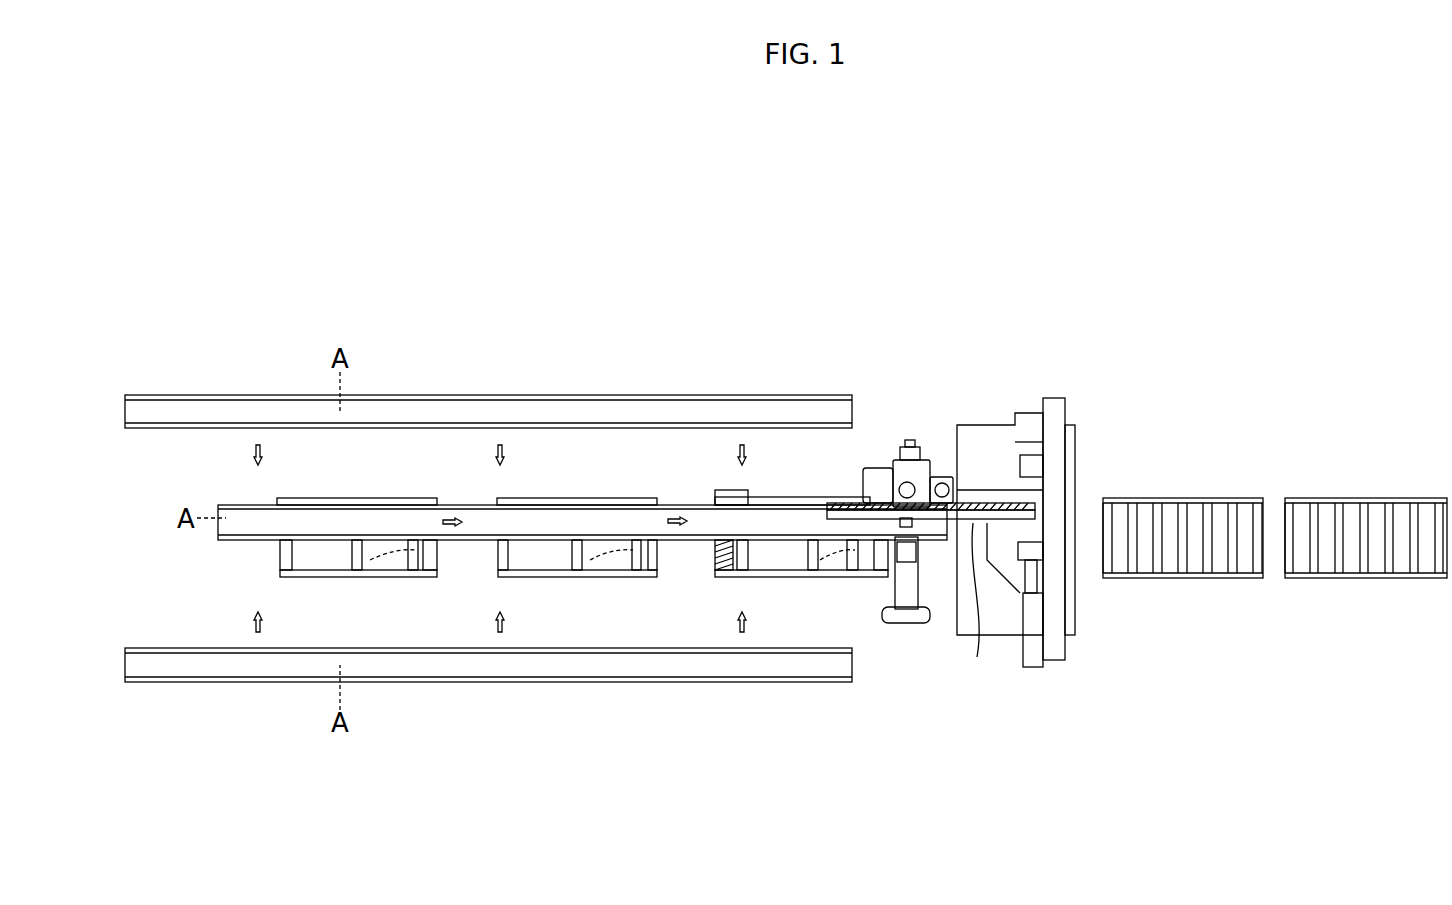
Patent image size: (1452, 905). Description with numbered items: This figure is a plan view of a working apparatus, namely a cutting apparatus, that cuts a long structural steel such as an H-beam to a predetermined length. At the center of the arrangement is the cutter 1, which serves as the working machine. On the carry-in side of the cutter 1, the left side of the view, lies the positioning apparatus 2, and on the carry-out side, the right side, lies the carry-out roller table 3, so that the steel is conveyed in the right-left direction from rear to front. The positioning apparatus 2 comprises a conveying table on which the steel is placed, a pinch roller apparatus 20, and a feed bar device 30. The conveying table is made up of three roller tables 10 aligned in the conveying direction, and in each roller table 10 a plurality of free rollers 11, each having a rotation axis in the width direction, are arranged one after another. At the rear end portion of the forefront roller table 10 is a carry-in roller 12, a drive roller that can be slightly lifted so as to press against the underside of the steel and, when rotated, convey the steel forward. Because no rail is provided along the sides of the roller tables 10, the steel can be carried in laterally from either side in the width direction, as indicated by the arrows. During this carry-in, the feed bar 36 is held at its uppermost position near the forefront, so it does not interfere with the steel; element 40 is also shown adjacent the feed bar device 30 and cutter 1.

The cutter 1 is at (1066, 411).
The positioning apparatus 2 is at (925, 372).
The carry-out roller table 3 is at (1380, 498).
The roller table 10 is at (383, 577).
The free roller 11 is at (290, 552).
The carry-in roller 12 is at (713, 562).
The pinch roller apparatus 20 is at (918, 458).
The feed bar device 30 is at (870, 466).
The feed bar 36 is at (999, 606).
The controller box 40 is at (962, 440).